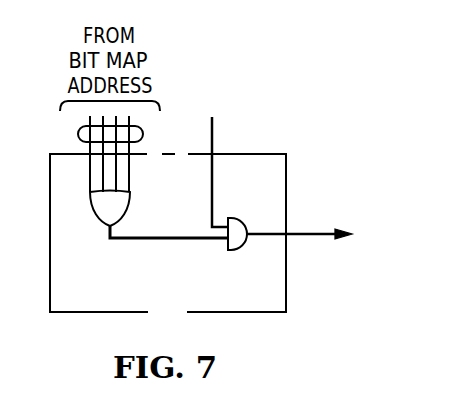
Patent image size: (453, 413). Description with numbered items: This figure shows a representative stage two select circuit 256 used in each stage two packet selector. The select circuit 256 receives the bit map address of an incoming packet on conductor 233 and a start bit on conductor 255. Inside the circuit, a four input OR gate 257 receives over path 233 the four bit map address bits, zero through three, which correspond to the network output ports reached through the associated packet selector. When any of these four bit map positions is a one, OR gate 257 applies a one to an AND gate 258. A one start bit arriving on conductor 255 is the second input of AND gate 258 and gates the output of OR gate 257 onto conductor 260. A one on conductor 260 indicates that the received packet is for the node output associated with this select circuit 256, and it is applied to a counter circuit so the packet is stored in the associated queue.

The conductor 233 is at (78, 135).
The conductor 255 is at (212, 140).
The select circuit 256 is at (162, 313).
The OR gate 257 is at (121, 205).
The AND gate 258 is at (235, 218).
The conductor 260 is at (313, 232).